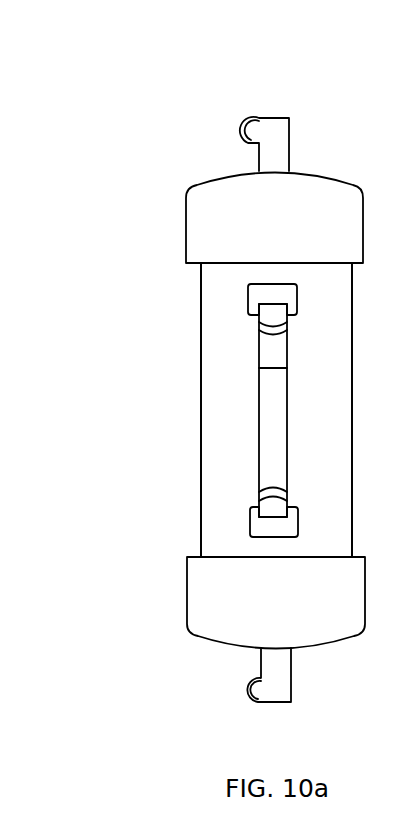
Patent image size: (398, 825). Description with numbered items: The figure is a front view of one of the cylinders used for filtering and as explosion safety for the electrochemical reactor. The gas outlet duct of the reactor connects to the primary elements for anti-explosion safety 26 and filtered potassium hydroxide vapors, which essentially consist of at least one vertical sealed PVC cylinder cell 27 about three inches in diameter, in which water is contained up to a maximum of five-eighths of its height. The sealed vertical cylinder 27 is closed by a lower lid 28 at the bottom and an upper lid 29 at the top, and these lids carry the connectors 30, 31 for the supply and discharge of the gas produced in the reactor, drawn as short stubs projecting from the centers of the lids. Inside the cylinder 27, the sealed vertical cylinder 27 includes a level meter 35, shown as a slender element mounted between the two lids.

The primary elements for anti-explosion safety 26 is at (196, 365).
The vertical sealed PVC cylinder cell 27 is at (229, 437).
The lower lid 28 is at (247, 585).
The upper lid 29 is at (233, 223).
The connector 30 is at (278, 686).
The connector 31 is at (268, 128).
The level meter 35 is at (272, 461).